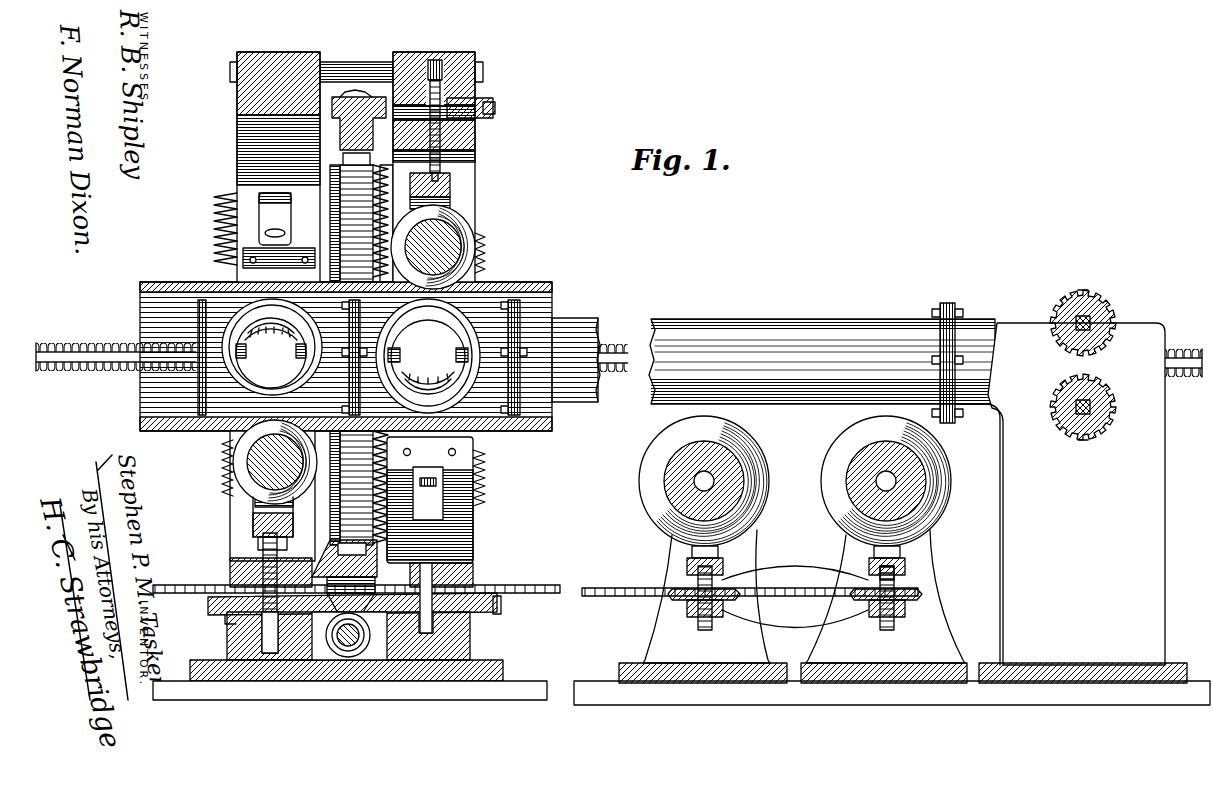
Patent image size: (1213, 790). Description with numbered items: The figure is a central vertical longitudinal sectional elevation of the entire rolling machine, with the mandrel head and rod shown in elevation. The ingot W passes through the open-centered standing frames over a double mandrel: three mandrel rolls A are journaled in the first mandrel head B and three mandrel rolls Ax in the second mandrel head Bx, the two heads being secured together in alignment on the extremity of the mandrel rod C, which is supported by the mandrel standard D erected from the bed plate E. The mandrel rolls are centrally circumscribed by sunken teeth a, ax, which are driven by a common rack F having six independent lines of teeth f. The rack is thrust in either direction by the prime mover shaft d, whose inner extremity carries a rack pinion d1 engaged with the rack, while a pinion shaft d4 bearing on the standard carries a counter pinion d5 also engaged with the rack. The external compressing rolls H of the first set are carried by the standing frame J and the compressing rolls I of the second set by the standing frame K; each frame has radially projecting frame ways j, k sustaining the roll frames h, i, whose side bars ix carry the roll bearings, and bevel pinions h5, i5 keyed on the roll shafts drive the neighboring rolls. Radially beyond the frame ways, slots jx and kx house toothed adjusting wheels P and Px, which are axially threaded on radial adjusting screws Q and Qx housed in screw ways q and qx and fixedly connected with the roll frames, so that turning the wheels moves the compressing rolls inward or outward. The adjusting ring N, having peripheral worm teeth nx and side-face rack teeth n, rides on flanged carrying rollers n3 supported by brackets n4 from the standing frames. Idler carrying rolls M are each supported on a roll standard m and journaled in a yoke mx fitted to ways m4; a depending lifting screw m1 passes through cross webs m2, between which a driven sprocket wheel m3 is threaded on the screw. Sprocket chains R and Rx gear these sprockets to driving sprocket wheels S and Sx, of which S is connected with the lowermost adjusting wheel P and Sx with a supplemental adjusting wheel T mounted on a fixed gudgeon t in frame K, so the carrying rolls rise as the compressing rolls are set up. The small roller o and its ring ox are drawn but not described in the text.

The ingot W is at (553, 428).
The first mandrel head B is at (272, 348).
The mandrel rolls A is at (202, 450).
The sunken teeth a is at (262, 333).
The second mandrel head Bx is at (428, 356).
The mandrel rolls Ax is at (492, 270).
The sunken teeth ax is at (430, 384).
The rack F is at (100, 370).
The lines of teeth f is at (98, 343).
The standing frame J is at (240, 53).
The frame ways j is at (292, 210).
The adjusting wheel P is at (218, 215).
The rack teeth n is at (336, 115).
The brackets n4 is at (387, 182).
The adjusting ring N is at (374, 100).
The worm teeth nx is at (356, 275).
The flanged carrying rollers n3 is at (354, 354).
The frame ways k is at (390, 223).
The standing frame K is at (478, 58).
The adjusting screw Qx is at (431, 62).
The screw way qx is at (438, 62).
The slot kx is at (482, 102).
The adjusting wheel Px is at (495, 112).
The roll frame i is at (452, 185).
The side bars ix is at (452, 203).
The external compressing rolls I is at (462, 236).
The bevel pinions i5 is at (486, 250).
The external compressing rolls H is at (255, 478).
The bevel pinions h5 is at (225, 470).
The roll frame h is at (290, 520).
The screw way q is at (270, 655).
The adjusting screw Q is at (258, 640).
The driving sprocket wheel S is at (230, 580).
The driving sprocket wheel Sx is at (470, 580).
The sprocket chain R is at (168, 585).
The supplemental adjusting wheel T is at (500, 614).
The slot jx is at (226, 620).
The roller o is at (345, 657).
The roller ring ox is at (359, 635).
The fixed gudgeon t is at (426, 633).
The bed plate E is at (480, 684).
The mandrel rod C is at (822, 363).
The mandrel standard D is at (1071, 503).
The pinion shaft d4 is at (1112, 310).
The counter pinion d5 is at (1083, 292).
The prime mover shaft d is at (1116, 409).
The rack pinion d1 is at (1083, 440).
The idler carrying rolls M is at (842, 448).
The roll standard m is at (793, 606).
The ways m4 is at (874, 552).
The yoke mx is at (722, 560).
The driven sprocket wheel m3 is at (917, 578).
The lifting screw m1 is at (696, 628).
The cross webs m2 is at (795, 594).
The sprocket chain Rx is at (612, 588).